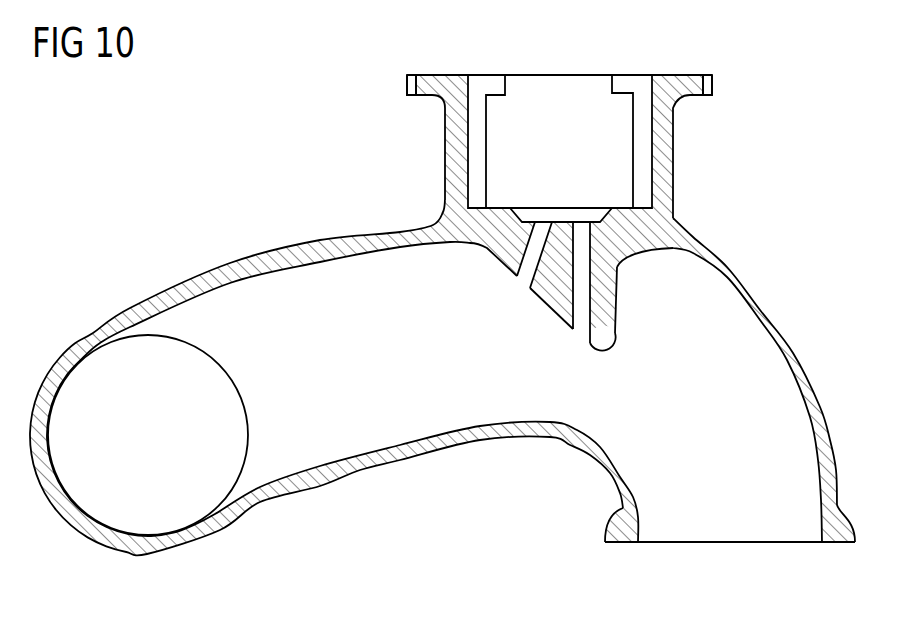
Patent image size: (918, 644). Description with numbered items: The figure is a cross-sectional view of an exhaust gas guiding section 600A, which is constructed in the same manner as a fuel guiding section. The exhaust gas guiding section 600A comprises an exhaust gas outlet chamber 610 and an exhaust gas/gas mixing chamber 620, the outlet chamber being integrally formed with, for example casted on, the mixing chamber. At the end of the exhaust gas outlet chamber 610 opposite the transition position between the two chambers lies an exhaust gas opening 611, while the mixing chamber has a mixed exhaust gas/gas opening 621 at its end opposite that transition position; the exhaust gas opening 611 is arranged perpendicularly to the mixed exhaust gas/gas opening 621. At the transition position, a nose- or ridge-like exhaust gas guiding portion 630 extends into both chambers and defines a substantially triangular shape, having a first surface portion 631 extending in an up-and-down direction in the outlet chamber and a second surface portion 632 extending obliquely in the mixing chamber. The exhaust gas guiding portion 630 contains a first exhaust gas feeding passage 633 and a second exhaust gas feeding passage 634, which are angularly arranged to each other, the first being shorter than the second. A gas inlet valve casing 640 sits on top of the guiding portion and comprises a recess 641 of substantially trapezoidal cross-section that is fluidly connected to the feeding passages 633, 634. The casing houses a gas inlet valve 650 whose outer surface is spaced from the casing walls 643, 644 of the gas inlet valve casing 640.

The exhaust gas guiding section 600A is at (298, 188).
The exhaust gas outlet chamber 610 is at (743, 451).
The exhaust gas opening 611 is at (753, 543).
The exhaust gas/gas mixing chamber 620 is at (433, 360).
The mixed exhaust gas/gas opening 621 is at (165, 451).
The exhaust gas guiding portion 630 is at (555, 282).
The first surface portion 631 is at (617, 305).
The second surface portion 632 is at (553, 307).
The first exhaust gas feeding passage 633 is at (518, 278).
The second exhaust gas feeding passage 634 is at (582, 317).
The gas inlet valve casing 640 is at (667, 148).
The recess 641 is at (573, 207).
The casing wall 643 is at (470, 140).
The casing wall 644 is at (650, 140).
The gas inlet valve 650 is at (560, 107).